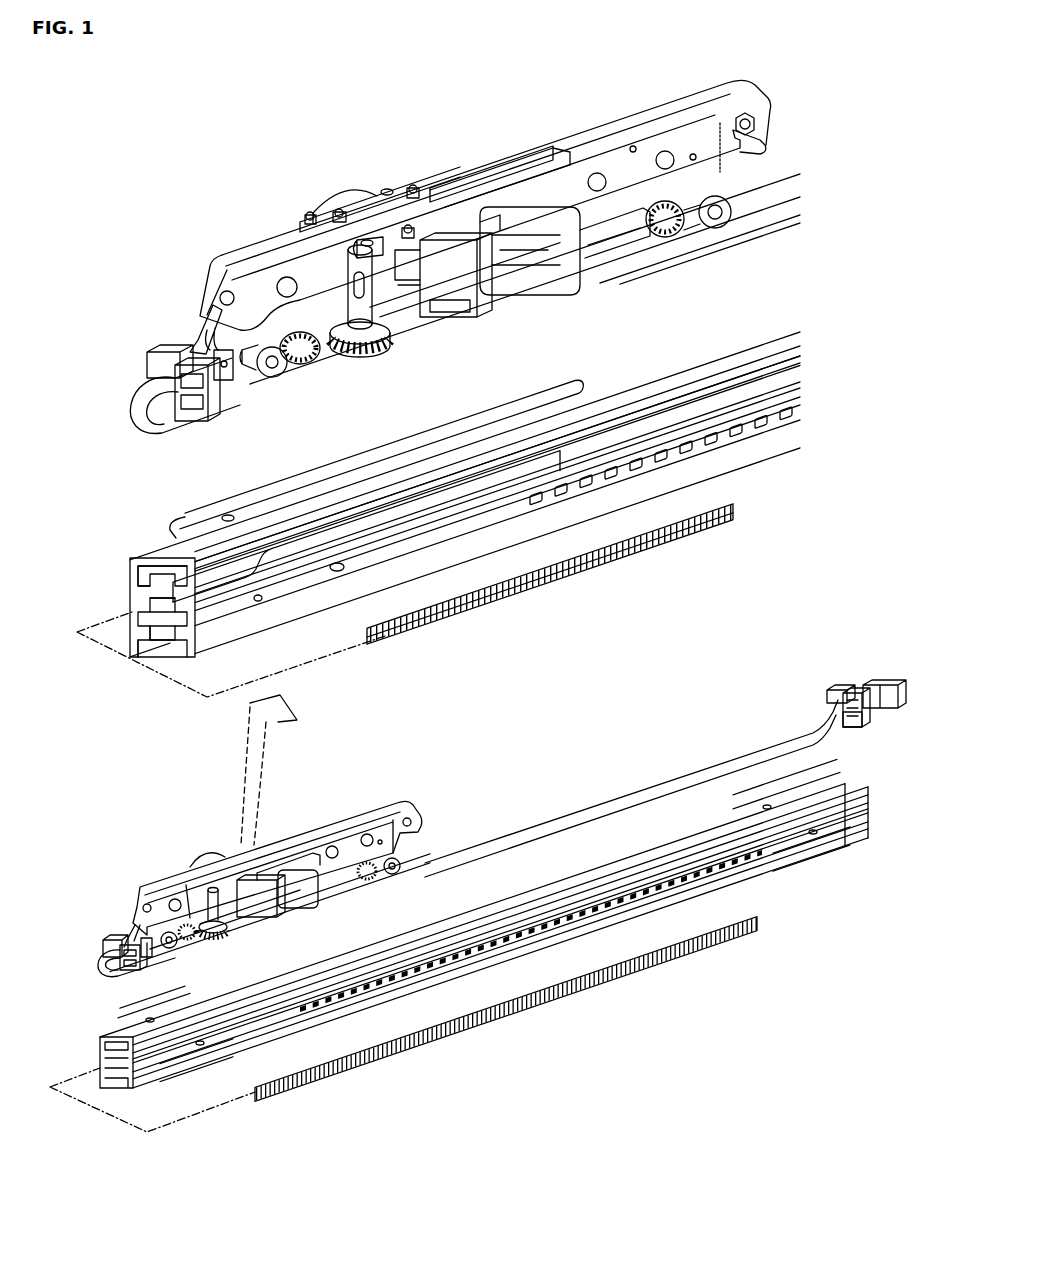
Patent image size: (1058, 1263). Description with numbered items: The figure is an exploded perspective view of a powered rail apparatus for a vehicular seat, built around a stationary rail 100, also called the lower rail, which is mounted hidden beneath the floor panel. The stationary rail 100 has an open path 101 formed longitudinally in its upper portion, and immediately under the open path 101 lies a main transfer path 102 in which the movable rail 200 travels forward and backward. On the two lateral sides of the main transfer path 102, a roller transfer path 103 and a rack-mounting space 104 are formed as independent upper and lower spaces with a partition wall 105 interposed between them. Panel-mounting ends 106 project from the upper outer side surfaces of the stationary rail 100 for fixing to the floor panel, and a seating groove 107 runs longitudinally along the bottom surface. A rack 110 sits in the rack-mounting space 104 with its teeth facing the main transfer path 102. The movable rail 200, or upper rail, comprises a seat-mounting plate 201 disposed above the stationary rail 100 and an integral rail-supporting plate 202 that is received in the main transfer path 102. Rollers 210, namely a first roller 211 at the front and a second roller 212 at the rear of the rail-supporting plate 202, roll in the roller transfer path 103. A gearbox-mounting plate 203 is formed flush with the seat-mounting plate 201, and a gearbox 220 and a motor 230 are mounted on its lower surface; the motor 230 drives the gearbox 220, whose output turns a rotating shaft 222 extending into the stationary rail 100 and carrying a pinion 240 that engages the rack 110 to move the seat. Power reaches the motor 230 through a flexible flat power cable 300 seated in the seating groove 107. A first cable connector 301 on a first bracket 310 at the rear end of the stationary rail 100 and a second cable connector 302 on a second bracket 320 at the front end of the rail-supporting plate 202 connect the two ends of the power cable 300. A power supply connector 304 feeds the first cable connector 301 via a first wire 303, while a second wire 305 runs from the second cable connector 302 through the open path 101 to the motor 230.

The stationary rail 100 is at (647, 380).
The open path 101 is at (577, 434).
The main transfer path 102 is at (140, 632).
The roller transfer path 103 is at (142, 582).
The rack-mounting space 104 is at (155, 618).
The partition wall 105 is at (143, 598).
The panel-mounting end 106 is at (200, 527).
The seating groove 107 is at (166, 645).
The rack 110 is at (513, 598).
The movable rail 200 is at (450, 478).
The seat-mounting plate 201 is at (265, 252).
The rail-supporting plate 202 is at (232, 292).
The gearbox-mounting plate 203 is at (378, 222).
The rollers 210 is at (280, 372).
The first roller 211 is at (258, 380).
The second roller 212 is at (722, 228).
The gearbox 220 is at (452, 273).
The rotating shaft 222 is at (382, 292).
The motor 230 is at (564, 248).
The pinion 240 is at (371, 358).
The power cable 300 is at (170, 428).
The first cable connector 301 is at (832, 688).
The second cable connector 302 is at (152, 362).
The first wire 303 is at (855, 690).
The power supply connector 304 is at (885, 683).
The second wire 305 is at (200, 338).
The first bracket 310 is at (858, 720).
The second bracket 320 is at (198, 412).